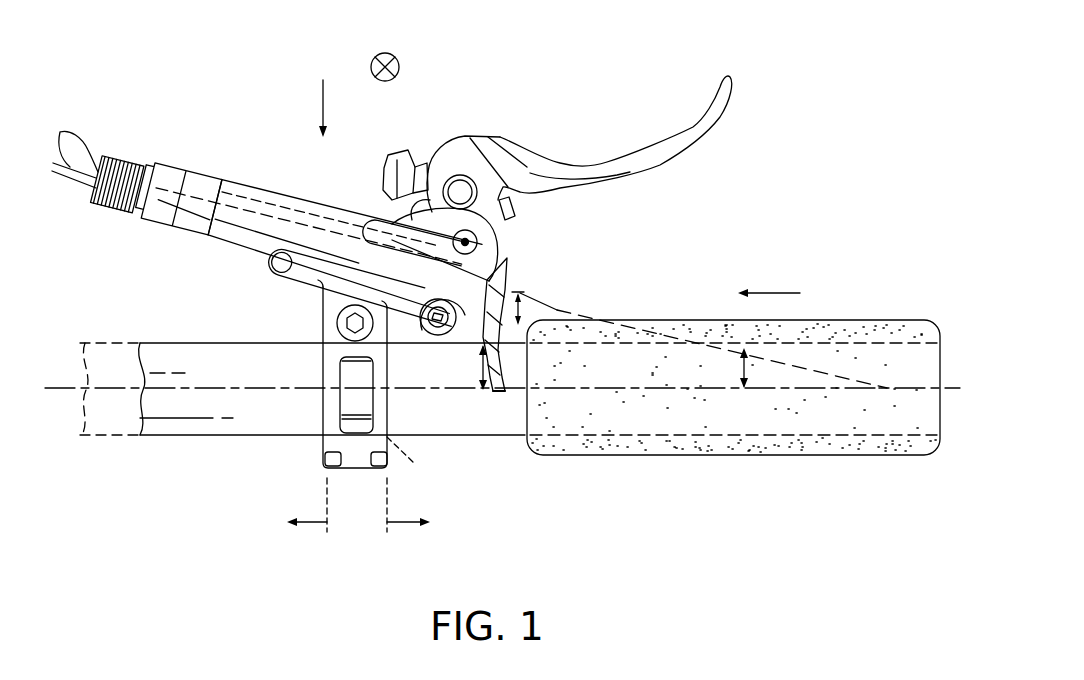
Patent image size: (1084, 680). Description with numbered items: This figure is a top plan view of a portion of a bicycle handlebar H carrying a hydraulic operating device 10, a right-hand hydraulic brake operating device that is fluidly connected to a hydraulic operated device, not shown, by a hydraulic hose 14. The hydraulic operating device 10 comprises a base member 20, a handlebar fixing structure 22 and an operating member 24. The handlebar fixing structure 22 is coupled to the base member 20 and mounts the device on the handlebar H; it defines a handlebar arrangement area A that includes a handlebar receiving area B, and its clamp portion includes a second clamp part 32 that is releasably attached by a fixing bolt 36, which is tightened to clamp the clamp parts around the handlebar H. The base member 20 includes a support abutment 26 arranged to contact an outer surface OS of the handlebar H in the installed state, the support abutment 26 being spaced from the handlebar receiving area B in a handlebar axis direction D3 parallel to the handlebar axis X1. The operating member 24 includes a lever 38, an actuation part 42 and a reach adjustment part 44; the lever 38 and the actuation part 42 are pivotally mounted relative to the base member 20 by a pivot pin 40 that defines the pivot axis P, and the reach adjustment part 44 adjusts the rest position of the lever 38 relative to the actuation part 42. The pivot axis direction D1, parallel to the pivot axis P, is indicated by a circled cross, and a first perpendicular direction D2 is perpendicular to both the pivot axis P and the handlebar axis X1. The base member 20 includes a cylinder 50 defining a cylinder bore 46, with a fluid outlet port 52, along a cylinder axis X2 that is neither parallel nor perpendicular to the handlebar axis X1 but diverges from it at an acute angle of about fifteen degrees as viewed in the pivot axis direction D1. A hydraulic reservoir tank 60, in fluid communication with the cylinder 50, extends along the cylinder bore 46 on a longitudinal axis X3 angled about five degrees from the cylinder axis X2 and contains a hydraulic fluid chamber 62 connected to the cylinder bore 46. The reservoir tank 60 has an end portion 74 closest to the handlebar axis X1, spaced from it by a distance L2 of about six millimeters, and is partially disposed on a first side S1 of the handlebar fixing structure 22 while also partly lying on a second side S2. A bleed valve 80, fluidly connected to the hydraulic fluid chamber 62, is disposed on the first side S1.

The hydraulic operating device 10 is at (212, 66).
The hydraulic hose 14 is at (92, 158).
The base member 20 is at (512, 258).
The handlebar fixing structure 22 is at (318, 459).
The operating member 24 is at (456, 126).
The support abutment 26 is at (525, 357).
The second clamp part 32 is at (338, 405).
The fixing bolt 36 is at (337, 320).
The lever 38 is at (660, 143).
The pivot pin 40 is at (476, 243).
The actuation part 42 is at (512, 264).
The reach adjustment part 44 is at (391, 157).
The cylinder bore 46 is at (223, 190).
The cylinder 50 is at (271, 188).
The fluid outlet port 52 is at (209, 228).
The hydraulic reservoir tank 60 is at (317, 222).
The hydraulic fluid chamber 62 is at (316, 283).
The end portion 74 is at (498, 374).
The bleed valve 80 is at (432, 344).
The pivot axis P is at (471, 241).
The handlebar receiving area B is at (410, 459).
The handlebar arrangement area A is at (100, 437).
The handlebar H is at (184, 448).
The outer surface OS is at (203, 342).
The handlebar axis X1 is at (60, 386).
The cylinder axis X2 is at (185, 196).
The longitudinal axis X3 is at (166, 210).
The distance L2 is at (480, 367).
The first side S1 is at (393, 523).
The second side S2 is at (312, 523).
The pivot axis direction D1 is at (399, 62).
The first perpendicular direction D2 is at (323, 80).
The handlebar axis direction D3 is at (786, 293).